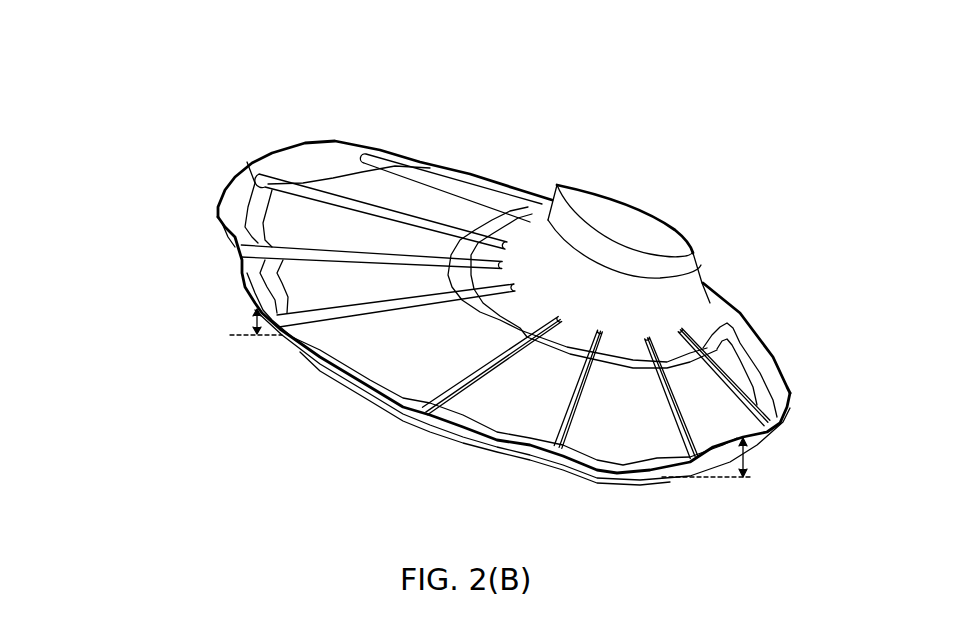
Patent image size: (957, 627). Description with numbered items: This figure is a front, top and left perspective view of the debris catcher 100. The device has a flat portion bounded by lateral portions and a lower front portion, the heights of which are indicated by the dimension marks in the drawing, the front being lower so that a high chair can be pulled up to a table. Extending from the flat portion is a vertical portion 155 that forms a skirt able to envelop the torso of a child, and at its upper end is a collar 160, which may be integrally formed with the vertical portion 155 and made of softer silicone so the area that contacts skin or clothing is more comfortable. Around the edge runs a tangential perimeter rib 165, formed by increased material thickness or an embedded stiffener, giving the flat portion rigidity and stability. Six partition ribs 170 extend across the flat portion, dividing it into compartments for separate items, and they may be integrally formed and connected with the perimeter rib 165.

The debris catcher 100 is at (791, 70).
The vertical portion 155 is at (537, 216).
The collar 160 is at (553, 188).
The perimeter rib 165 is at (218, 217).
The partition rib 170 is at (249, 173).